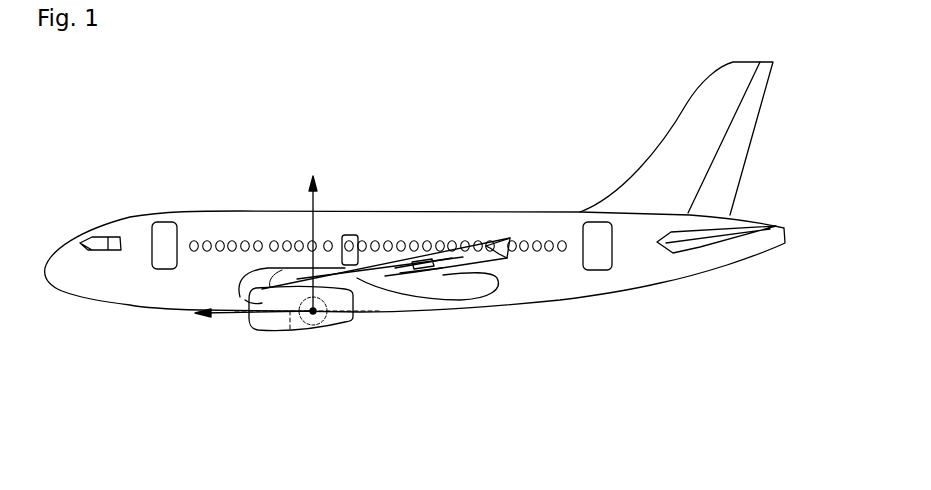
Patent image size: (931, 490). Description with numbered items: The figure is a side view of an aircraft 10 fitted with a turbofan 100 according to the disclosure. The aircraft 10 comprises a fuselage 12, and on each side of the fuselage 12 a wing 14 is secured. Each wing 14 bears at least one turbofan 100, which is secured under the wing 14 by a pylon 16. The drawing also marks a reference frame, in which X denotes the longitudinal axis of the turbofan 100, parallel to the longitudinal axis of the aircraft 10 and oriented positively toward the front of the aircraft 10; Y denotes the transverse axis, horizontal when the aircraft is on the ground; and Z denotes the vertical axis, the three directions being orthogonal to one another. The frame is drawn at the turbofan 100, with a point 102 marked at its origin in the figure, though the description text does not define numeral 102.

The aircraft 10 is at (415, 213).
The fuselage 12 is at (565, 282).
The wing 14 is at (413, 263).
The pylon 16 is at (367, 290).
The turbofan 100 is at (252, 302).
The origin point of reference frame 102 is at (226, 358).